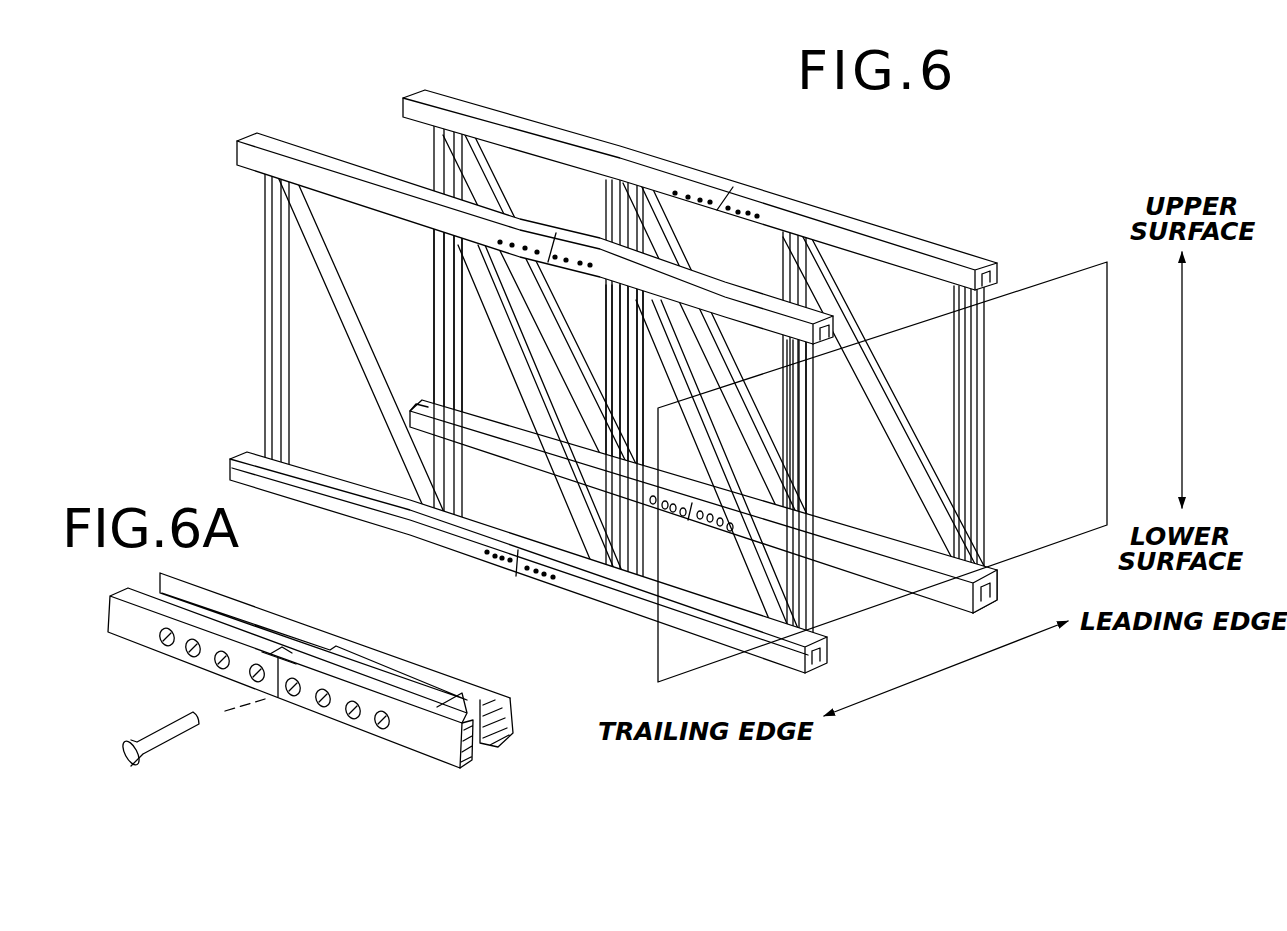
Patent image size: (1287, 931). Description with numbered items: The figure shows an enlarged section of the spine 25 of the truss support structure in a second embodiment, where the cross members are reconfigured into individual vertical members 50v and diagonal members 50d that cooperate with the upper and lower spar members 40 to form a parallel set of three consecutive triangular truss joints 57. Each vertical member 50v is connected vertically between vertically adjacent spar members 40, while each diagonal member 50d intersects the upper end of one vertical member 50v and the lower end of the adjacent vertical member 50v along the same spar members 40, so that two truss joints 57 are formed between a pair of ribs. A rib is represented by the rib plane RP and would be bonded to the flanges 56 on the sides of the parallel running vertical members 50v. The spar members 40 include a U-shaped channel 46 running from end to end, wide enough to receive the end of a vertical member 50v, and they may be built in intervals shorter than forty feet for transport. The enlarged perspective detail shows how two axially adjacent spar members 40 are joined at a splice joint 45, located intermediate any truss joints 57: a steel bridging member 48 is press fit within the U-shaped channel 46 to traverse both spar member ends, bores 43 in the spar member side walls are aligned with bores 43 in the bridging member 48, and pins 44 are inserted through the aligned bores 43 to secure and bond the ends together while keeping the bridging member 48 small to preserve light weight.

In FIG. 6, the spine 25 is at (587, 121).
In FIG. 6, the spar member 40 is at (490, 112).
In FIG. 6A, the spar member 40 is at (207, 584).
In FIG. 6A, the bores 43 is at (213, 668).
In FIG. 6, the pins 44 is at (518, 568).
In FIG. 6A, the pins 44 is at (173, 748).
In FIG. 6A, the splice joint 45 is at (298, 604).
In FIG. 6, the U-shaped channel 46 is at (993, 583).
In FIG. 6A, the U-shaped channel 46 is at (488, 708).
In FIG. 6, the bridging member 48 is at (517, 550).
In FIG. 6A, the bridging member 48 is at (373, 673).
In FIG. 6, the vertical member 50v is at (268, 207).
In FIG. 6, the diagonal member 50d is at (338, 263).
In FIG. 6, the flange 56 is at (990, 293).
In FIG. 6, the truss joint 57 is at (430, 524).
In FIG. 6, the rib plane RP is at (660, 667).